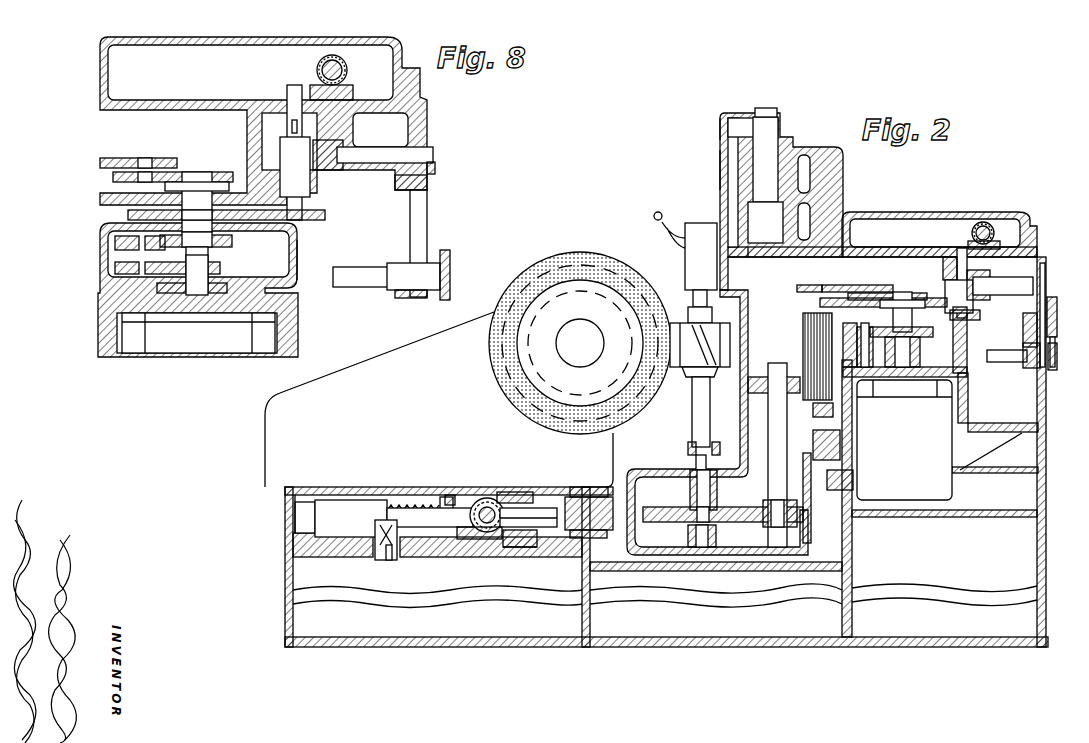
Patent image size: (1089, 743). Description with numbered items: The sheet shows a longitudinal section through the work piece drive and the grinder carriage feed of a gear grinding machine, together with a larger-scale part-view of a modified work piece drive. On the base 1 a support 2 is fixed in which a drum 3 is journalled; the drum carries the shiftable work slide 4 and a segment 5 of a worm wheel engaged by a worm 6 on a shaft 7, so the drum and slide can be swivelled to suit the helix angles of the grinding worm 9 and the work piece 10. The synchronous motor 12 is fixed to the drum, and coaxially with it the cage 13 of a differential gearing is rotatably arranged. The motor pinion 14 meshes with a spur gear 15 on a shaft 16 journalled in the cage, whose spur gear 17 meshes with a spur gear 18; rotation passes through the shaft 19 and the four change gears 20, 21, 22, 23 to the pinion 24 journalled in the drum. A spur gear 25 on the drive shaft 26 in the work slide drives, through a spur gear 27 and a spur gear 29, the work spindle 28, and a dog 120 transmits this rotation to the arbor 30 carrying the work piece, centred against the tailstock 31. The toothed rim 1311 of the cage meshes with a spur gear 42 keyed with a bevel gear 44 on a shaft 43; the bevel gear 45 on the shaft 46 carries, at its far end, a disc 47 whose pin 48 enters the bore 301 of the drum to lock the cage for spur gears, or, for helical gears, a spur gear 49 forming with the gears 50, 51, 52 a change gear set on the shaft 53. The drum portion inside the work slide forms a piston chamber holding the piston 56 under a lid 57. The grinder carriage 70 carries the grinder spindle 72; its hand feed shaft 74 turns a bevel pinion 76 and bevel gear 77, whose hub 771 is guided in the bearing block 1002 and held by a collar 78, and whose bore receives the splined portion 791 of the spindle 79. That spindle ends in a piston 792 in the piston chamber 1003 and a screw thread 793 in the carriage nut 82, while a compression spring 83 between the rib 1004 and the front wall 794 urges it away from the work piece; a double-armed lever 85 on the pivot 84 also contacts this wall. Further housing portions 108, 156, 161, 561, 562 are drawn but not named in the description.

In FIG. 2, the base 1 is at (1040, 505).
In FIG. 8, the support 2 is at (186, 37).
In FIG. 2, the support 2 is at (884, 212).
In FIG. 8, the drum 3 is at (420, 94).
In FIG. 2, the drum 3 is at (808, 160).
In FIG. 2, the work slide 4 is at (722, 184).
In FIG. 8, the segment of a worm wheel 5 is at (352, 85).
In FIG. 2, the segment of a worm wheel 5 is at (993, 243).
In FIG. 8, the worm 6 is at (345, 64).
In FIG. 2, the worm 6 is at (990, 222).
In FIG. 8, the shaft 7 is at (320, 66).
In FIG. 2, the shaft 7 is at (980, 222).
In FIG. 2, the grinding worm 9 is at (598, 258).
In FIG. 2, the work piece 10 is at (718, 372).
In FIG. 8, the motor 12 is at (182, 340).
In FIG. 2, the motor 12 is at (948, 448).
In FIG. 8, the cage of a differential gearing 13 is at (292, 282).
In FIG. 2, the cage of a differential gearing 13 is at (962, 364).
In FIG. 8, the spur gear pinion 14 is at (222, 268).
In FIG. 2, the spur gear pinion 14 is at (950, 342).
In FIG. 8, the spur gear 15 is at (190, 260).
In FIG. 2, the spur gear 15 is at (820, 385).
In FIG. 8, the shaft 16 is at (160, 250).
In FIG. 2, the shaft 16 is at (857, 347).
In FIG. 8, the spur gear 17 is at (126, 250).
In FIG. 2, the spur gear 17 is at (843, 338).
In FIG. 8, the spur gear 18 is at (233, 240).
In FIG. 2, the spur gear 18 is at (925, 332).
In FIG. 8, the shaft 19 is at (196, 173).
In FIG. 2, the shaft 19 is at (902, 293).
In FIG. 8, the change gear 20 is at (224, 176).
In FIG. 2, the change gear 20 is at (915, 300).
In FIG. 8, the change gear 21 is at (115, 178).
In FIG. 2, the change gear 21 is at (838, 285).
In FIG. 8, the change gear 22 is at (120, 158).
In FIG. 2, the change gear 22 is at (862, 293).
In FIG. 2, the change gear 23 is at (805, 285).
In FIG. 2, the pinion 24 is at (803, 326).
In FIG. 2, the spur gear 25 is at (756, 393).
In FIG. 2, the drive shaft 26 is at (772, 450).
In FIG. 2, the spur gear 27 is at (766, 500).
In FIG. 2, the work spindle 28 is at (720, 492).
In FIG. 2, the spur gear 29 is at (745, 522).
In FIG. 2, the arbor 30 is at (692, 418).
In FIG. 2, the tailstock 31 is at (685, 268).
In FIG. 2, the spur gear 42 is at (968, 320).
In FIG. 8, the shaft 43 is at (285, 165).
In FIG. 2, the shaft 43 is at (945, 270).
In FIG. 8, the bevel gear 44 is at (303, 112).
In FIG. 2, the bevel gear 44 is at (955, 258).
In FIG. 8, the bevel gear 45 is at (328, 172).
In FIG. 2, the bevel gear 45 is at (982, 300).
In FIG. 8, the shaft 46 is at (370, 150).
In FIG. 2, the shaft 46 is at (1010, 295).
In FIG. 8, the disc 47 is at (427, 138).
In FIG. 8, the pin 48 is at (436, 169).
In FIG. 2, the spur gear 49 is at (1044, 268).
In FIG. 2, the spur gear 50 is at (1052, 303).
In FIG. 2, the spur gear 51 is at (1053, 337).
In FIG. 8, the change gear 52 is at (450, 262).
In FIG. 2, the change gear 52 is at (1054, 362).
In FIG. 8, the shaft 53 is at (352, 270).
In FIG. 2, the shaft 53 is at (1003, 362).
In FIG. 2, the piston 56 is at (764, 108).
In FIG. 2, the lid 57 is at (782, 138).
In FIG. 2, the grinder carriage 70 is at (362, 366).
In FIG. 2, the grinder spindle 72 is at (592, 330).
In FIG. 2, the shaft 74 is at (480, 520).
In FIG. 2, the bevel pinion 76 is at (487, 540).
In FIG. 2, the bevel gear 77 is at (495, 500).
In FIG. 2, the collar 78 is at (537, 536).
In FIG. 2, the spindle 79 is at (462, 510).
In FIG. 2, the nut 82 is at (605, 536).
In FIG. 2, the compression spring 83 is at (438, 497).
In FIG. 2, the pivot 84 is at (386, 560).
In FIG. 2, the double-armed lever 85 is at (394, 550).
In FIG. 2, the wall 108 is at (726, 138).
In FIG. 2, the dog 120 is at (688, 446).
In FIG. 2, the partition 156 is at (748, 252).
In FIG. 2, the wall 161 is at (297, 572).
In FIG. 8, the bore 301 is at (424, 185).
In FIG. 2, the bore 301 is at (1025, 320).
In FIG. 2, the wall 561 is at (722, 172).
In FIG. 2, the channel 562 is at (796, 235).
In FIG. 2, the hub 771 is at (522, 492).
In FIG. 2, the splined portion 791 is at (545, 510).
In FIG. 2, the piston 792 is at (372, 500).
In FIG. 2, the screw thread 793 is at (606, 510).
In FIG. 2, the front wall 794 is at (392, 500).
In FIG. 2, the bearing block 1002 is at (523, 549).
In FIG. 2, the piston chamber 1003 is at (306, 502).
In FIG. 2, the rib 1004 is at (453, 495).
In FIG. 8, the toothed rim 1311 is at (130, 214).
In FIG. 2, the toothed rim 1311 is at (822, 302).